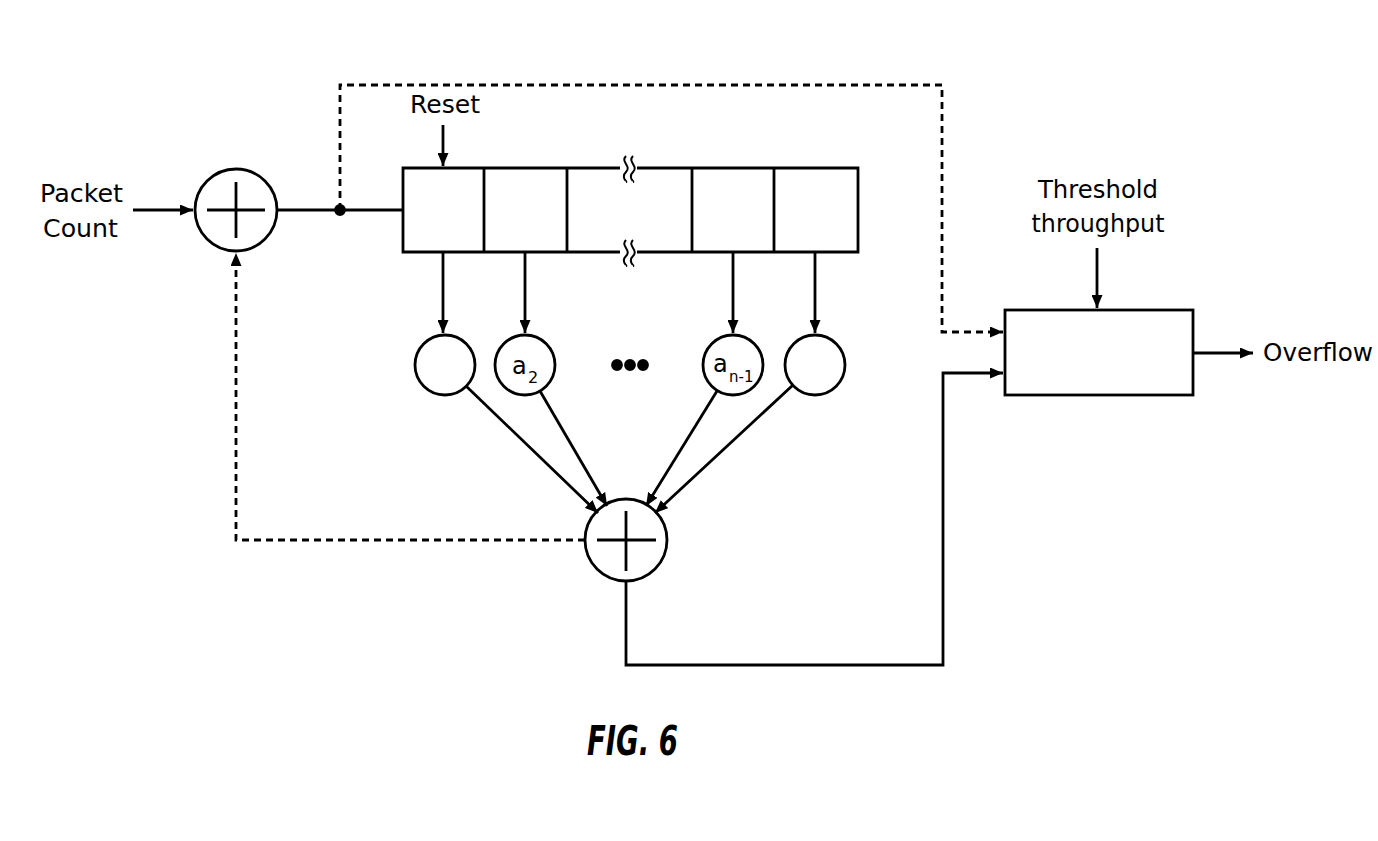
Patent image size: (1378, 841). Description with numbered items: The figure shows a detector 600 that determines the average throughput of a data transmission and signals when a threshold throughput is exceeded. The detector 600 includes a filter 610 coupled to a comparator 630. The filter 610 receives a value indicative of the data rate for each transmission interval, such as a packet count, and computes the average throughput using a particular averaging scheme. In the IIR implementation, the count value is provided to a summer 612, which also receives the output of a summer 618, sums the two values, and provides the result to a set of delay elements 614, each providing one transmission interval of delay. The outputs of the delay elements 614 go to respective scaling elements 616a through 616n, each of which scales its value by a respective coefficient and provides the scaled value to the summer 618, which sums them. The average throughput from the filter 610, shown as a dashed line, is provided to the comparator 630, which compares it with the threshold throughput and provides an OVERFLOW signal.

The detector 600 is at (1220, 78).
The filter 610 is at (614, 44).
The summer 612 is at (233, 168).
The delay elements 614 is at (808, 168).
The scaling element 616a is at (416, 370).
The scaling element 616n is at (845, 371).
The summer 618 is at (668, 547).
The comparator 630 is at (1137, 310).